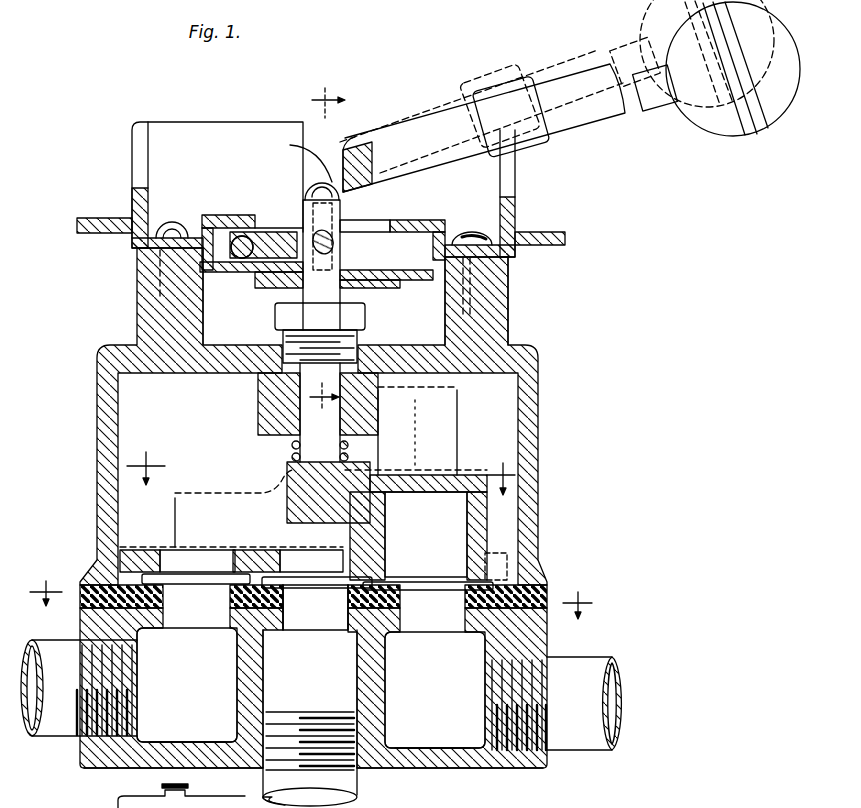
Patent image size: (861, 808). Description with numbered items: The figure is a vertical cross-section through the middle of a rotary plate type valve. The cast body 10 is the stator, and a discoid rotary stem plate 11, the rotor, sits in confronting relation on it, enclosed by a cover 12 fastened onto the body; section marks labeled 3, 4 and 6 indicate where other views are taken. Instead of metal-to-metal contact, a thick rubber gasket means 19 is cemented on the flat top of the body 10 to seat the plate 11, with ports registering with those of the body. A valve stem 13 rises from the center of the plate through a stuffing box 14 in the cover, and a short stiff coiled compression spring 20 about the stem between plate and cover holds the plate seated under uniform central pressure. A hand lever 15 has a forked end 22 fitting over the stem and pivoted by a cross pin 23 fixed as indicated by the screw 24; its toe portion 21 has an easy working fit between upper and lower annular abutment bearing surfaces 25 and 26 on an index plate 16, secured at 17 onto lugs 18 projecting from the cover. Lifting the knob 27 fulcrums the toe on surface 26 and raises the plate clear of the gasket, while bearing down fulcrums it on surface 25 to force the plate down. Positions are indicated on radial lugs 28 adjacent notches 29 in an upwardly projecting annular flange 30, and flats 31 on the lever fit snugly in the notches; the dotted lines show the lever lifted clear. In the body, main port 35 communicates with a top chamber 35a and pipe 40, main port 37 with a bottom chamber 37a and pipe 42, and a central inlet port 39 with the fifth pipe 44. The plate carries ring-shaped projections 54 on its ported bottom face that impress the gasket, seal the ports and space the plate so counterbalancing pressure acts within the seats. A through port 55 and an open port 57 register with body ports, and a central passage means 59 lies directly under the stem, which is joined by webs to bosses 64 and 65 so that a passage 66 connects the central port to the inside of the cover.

The cast body 10 is at (530, 770).
The rotary stem plate member 11 is at (497, 580).
The cover 12 is at (540, 428).
The valve stem 13 is at (335, 300).
The stuffing box 14 is at (358, 376).
The hand lever 15 is at (573, 122).
The index plate 16 is at (518, 221).
The fastening of index plate 17 is at (188, 201).
The lugs 18 is at (508, 306).
The gasket means 19 is at (550, 597).
The coiled compression spring 20 is at (348, 456).
The toe portion 21 is at (238, 276).
The forked end 22 is at (300, 189).
The cross pin 23 is at (340, 245).
The screw 24 is at (292, 147).
The upper annular abutment bearing surface 25 is at (210, 218).
The lower annular abutment bearing surface 26 is at (238, 258).
The knob 27 is at (712, 125).
The lugs 28 is at (90, 220).
The notches 29 is at (138, 165).
The annular flange 30 is at (172, 126).
The flats 31 is at (502, 110).
The main port 35 is at (183, 626).
The top chamber 35a is at (177, 740).
The main port 37 is at (433, 630).
The bottom chamber 37a is at (412, 745).
The central port 39 is at (316, 626).
The pipe 40 is at (57, 730).
The pipe 42 is at (565, 742).
The fifth pipe 44 is at (360, 792).
The ring-shaped projections 54 is at (315, 607).
The through port 55 is at (196, 567).
The open port 57 is at (418, 536).
The central port or passage means 59 is at (317, 569).
The boss 64 is at (457, 416).
The boss 65 is at (432, 478).
The passage 66 is at (300, 528).
The section line 3- 3 is at (312, 600).
The section line 4- 4 is at (321, 468).
The section line 6- 6 is at (327, 250).